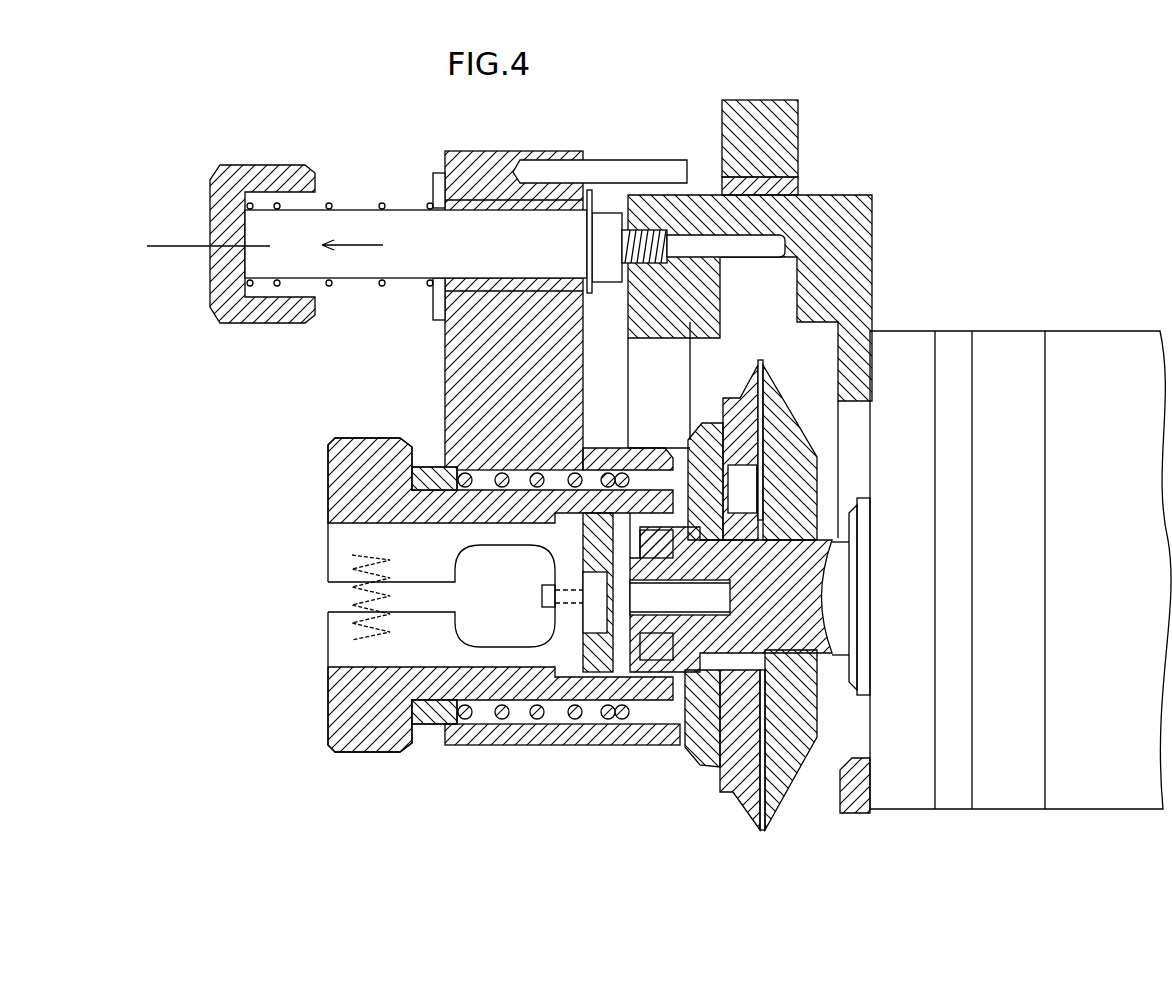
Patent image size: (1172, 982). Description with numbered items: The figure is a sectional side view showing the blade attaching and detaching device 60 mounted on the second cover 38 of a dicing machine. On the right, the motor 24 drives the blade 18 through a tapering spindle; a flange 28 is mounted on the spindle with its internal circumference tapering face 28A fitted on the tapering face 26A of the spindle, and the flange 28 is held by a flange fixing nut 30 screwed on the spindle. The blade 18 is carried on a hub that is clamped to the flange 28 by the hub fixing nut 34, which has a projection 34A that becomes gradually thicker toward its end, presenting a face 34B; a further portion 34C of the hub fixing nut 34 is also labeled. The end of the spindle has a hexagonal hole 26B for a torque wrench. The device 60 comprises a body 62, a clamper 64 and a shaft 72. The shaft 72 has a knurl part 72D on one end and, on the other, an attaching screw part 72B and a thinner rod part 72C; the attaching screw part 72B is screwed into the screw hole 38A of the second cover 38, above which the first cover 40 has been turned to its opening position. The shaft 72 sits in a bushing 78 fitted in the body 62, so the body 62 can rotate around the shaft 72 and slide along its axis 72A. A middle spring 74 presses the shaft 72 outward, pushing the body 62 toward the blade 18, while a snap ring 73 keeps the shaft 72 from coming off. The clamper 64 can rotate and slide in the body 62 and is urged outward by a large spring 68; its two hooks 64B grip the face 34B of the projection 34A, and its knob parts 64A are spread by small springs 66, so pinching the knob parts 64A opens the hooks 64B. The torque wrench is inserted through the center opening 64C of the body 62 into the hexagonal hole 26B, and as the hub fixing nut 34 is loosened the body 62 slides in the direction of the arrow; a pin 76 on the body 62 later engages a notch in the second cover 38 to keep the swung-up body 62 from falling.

The blade 18 is at (761, 362).
The motor 24 is at (1068, 348).
The tapering face 26A is at (818, 738).
The hexagonal hole 26B is at (565, 746).
The flange 28 is at (787, 427).
The internal circumference tapering face 28A is at (748, 487).
The flange fixing nut 30 is at (622, 545).
The hub fixing nut 34 is at (735, 432).
The projection 34A is at (640, 745).
The face 34B is at (706, 677).
The hub flange 34C is at (683, 518).
The second cover 38 is at (858, 252).
The screw hole 38A is at (640, 338).
The first cover 40 is at (798, 153).
The blade attaching and detaching device 60 is at (441, 788).
The body 62 is at (445, 382).
The clamper 64 is at (437, 505).
The knob parts 64A is at (330, 470).
The hooks 64B is at (690, 445).
The center opening 64C is at (598, 612).
The small springs 66 is at (343, 597).
The large spring 68 is at (466, 470).
The shaft 72 is at (358, 266).
The axis 72A is at (172, 248).
The attaching screw part 72B is at (640, 260).
The rod part 72C is at (763, 245).
The knurl part 72D is at (210, 173).
The snap ring 73 is at (602, 200).
The middle spring 74 is at (382, 205).
The pin 76 is at (648, 170).
The bushing 78 is at (435, 175).